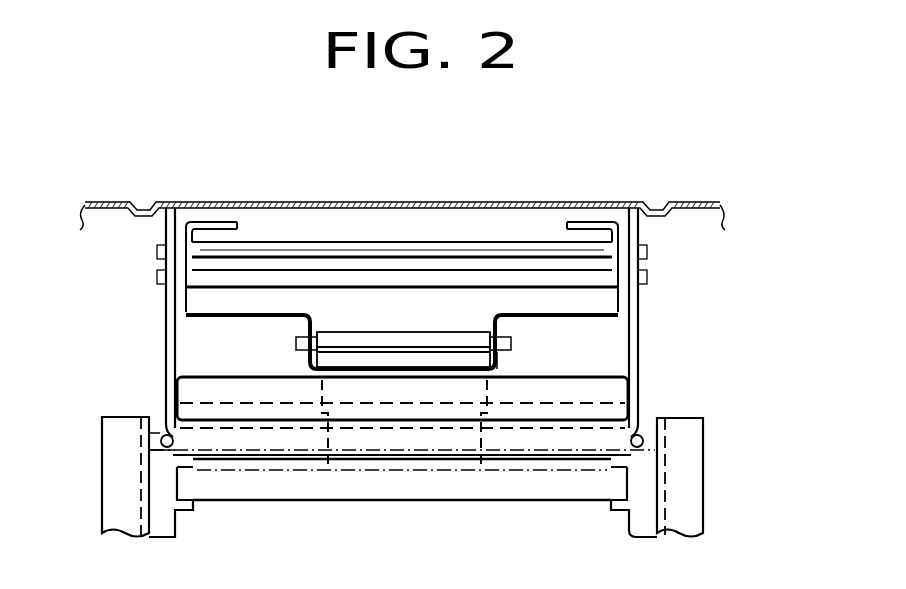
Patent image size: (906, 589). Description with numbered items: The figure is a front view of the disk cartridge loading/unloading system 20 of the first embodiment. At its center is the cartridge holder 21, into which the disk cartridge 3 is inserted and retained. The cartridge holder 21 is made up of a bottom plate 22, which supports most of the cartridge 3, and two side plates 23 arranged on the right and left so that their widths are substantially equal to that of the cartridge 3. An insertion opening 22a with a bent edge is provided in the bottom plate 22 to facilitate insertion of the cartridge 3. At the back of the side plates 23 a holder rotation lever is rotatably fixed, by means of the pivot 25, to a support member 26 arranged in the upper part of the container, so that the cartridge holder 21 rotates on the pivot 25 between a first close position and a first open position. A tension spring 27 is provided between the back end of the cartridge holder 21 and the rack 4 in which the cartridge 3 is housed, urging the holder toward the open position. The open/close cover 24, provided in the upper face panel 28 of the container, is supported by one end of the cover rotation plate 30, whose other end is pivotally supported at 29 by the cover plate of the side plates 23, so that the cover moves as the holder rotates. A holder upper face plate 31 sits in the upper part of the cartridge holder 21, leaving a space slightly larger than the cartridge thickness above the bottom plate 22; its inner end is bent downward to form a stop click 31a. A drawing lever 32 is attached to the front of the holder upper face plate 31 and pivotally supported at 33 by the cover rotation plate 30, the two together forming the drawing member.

The upper face panel 28 is at (96, 201).
The support member 26 is at (204, 221).
The pivot of cover rotation plate 29 is at (270, 268).
The open/close cover 24 is at (358, 204).
The pivot 25 is at (420, 243).
The pivot of drawing lever 33 is at (458, 333).
The disk cartridge loading/unloading system 20 is at (537, 186).
The cover rotation plate 30 is at (166, 308).
The side plates 23 is at (166, 358).
The disk cartridge 3 is at (176, 400).
The cartridge holder 21 is at (525, 366).
The tension spring 27 is at (165, 448).
The rack 4 is at (157, 511).
The stop click 31a is at (334, 440).
The insertion opening 22a is at (389, 440).
The holder upper face plate 31 is at (452, 375).
The drawing lever 32 is at (508, 370).
The bottom plate 22 is at (584, 428).